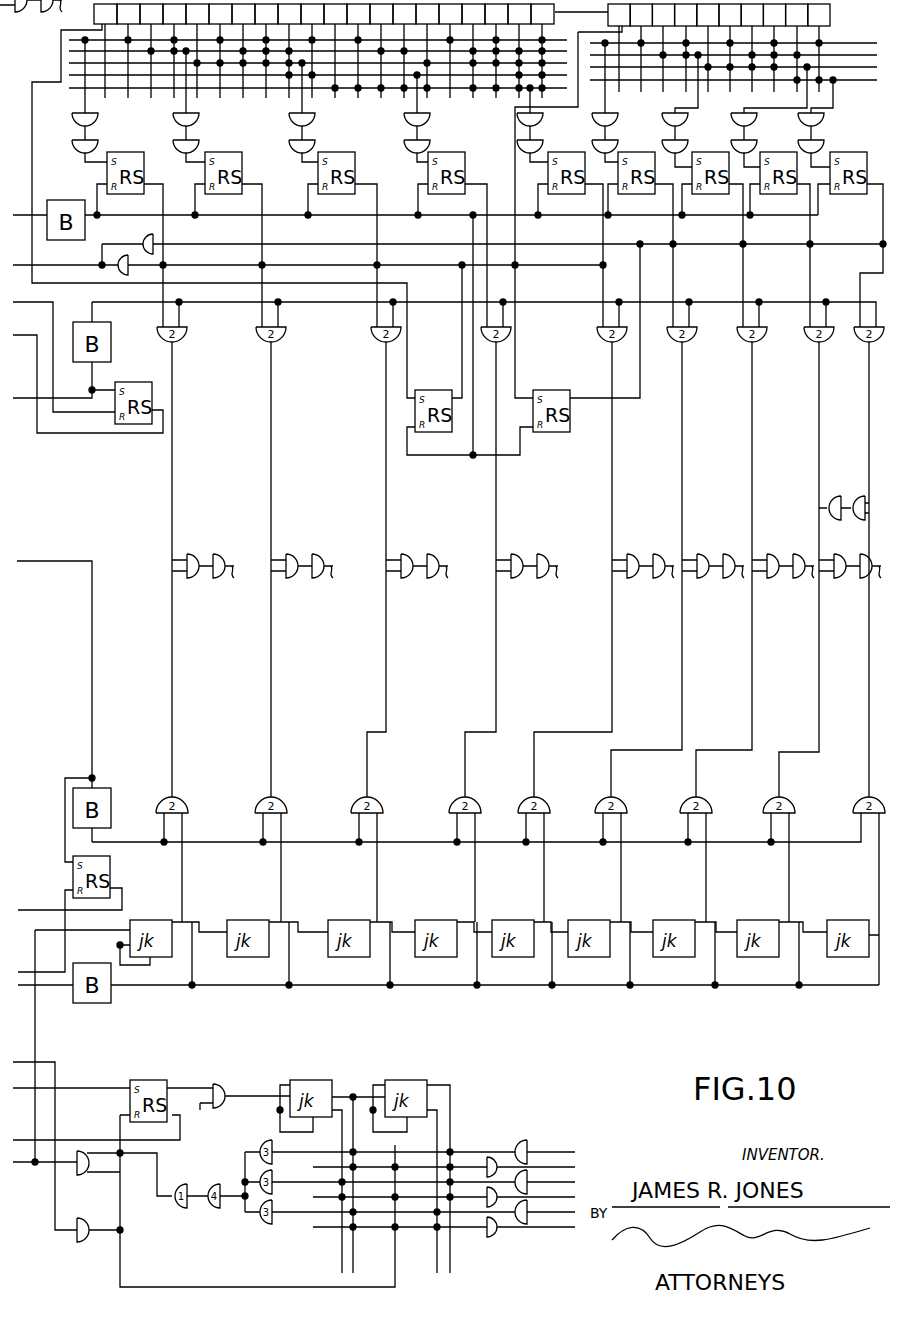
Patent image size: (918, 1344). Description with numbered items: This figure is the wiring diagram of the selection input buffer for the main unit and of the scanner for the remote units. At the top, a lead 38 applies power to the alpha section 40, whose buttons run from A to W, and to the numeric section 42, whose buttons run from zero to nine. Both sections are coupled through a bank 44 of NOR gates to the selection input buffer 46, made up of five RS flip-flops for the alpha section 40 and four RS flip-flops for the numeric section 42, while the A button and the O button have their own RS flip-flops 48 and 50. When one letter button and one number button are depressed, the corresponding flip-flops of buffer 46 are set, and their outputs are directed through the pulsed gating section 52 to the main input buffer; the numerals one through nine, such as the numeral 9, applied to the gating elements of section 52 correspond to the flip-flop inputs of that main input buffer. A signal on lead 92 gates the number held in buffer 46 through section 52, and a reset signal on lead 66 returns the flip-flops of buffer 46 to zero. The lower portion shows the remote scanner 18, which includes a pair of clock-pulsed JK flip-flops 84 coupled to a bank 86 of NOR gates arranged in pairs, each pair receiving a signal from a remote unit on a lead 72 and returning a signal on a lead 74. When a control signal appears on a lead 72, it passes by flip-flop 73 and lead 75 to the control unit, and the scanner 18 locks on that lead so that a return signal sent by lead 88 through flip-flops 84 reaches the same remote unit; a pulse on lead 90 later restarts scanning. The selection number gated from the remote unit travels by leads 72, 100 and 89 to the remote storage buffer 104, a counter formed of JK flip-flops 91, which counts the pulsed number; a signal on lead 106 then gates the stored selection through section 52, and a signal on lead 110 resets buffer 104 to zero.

The lead 38 is at (50, 5).
The alpha section 40 is at (600, 14).
The numeric section 42 is at (828, 8).
The bank of NOR gates 44 is at (78, 126).
The selection input buffer 46 is at (98, 170).
The RS flip-flop 48 is at (415, 410).
The RS flip-flop 50 is at (573, 422).
The pulsed gating section 52 is at (160, 565).
The gating element numeral 9 is at (827, 508).
The lead 66 is at (44, 232).
The lead 92 is at (72, 342).
The lead 106 is at (92, 655).
The JK flip-flops 91 is at (745, 918).
The remote storage buffer 104 is at (225, 988).
The lead 110 is at (50, 988).
The lead 89 is at (35, 1048).
The lead 88 is at (66, 1060).
The lead 90 is at (58, 1090).
The flip-flop 73 is at (156, 1077).
The lead 100 is at (64, 1164).
The lead 75 is at (140, 1160).
The JK flip-flops 84 is at (395, 1078).
The remote scanner 18 is at (460, 1083).
The bank of NOR gates 86 is at (497, 1140).
The lead 72 is at (568, 1182).
The lead 74 is at (578, 1197).